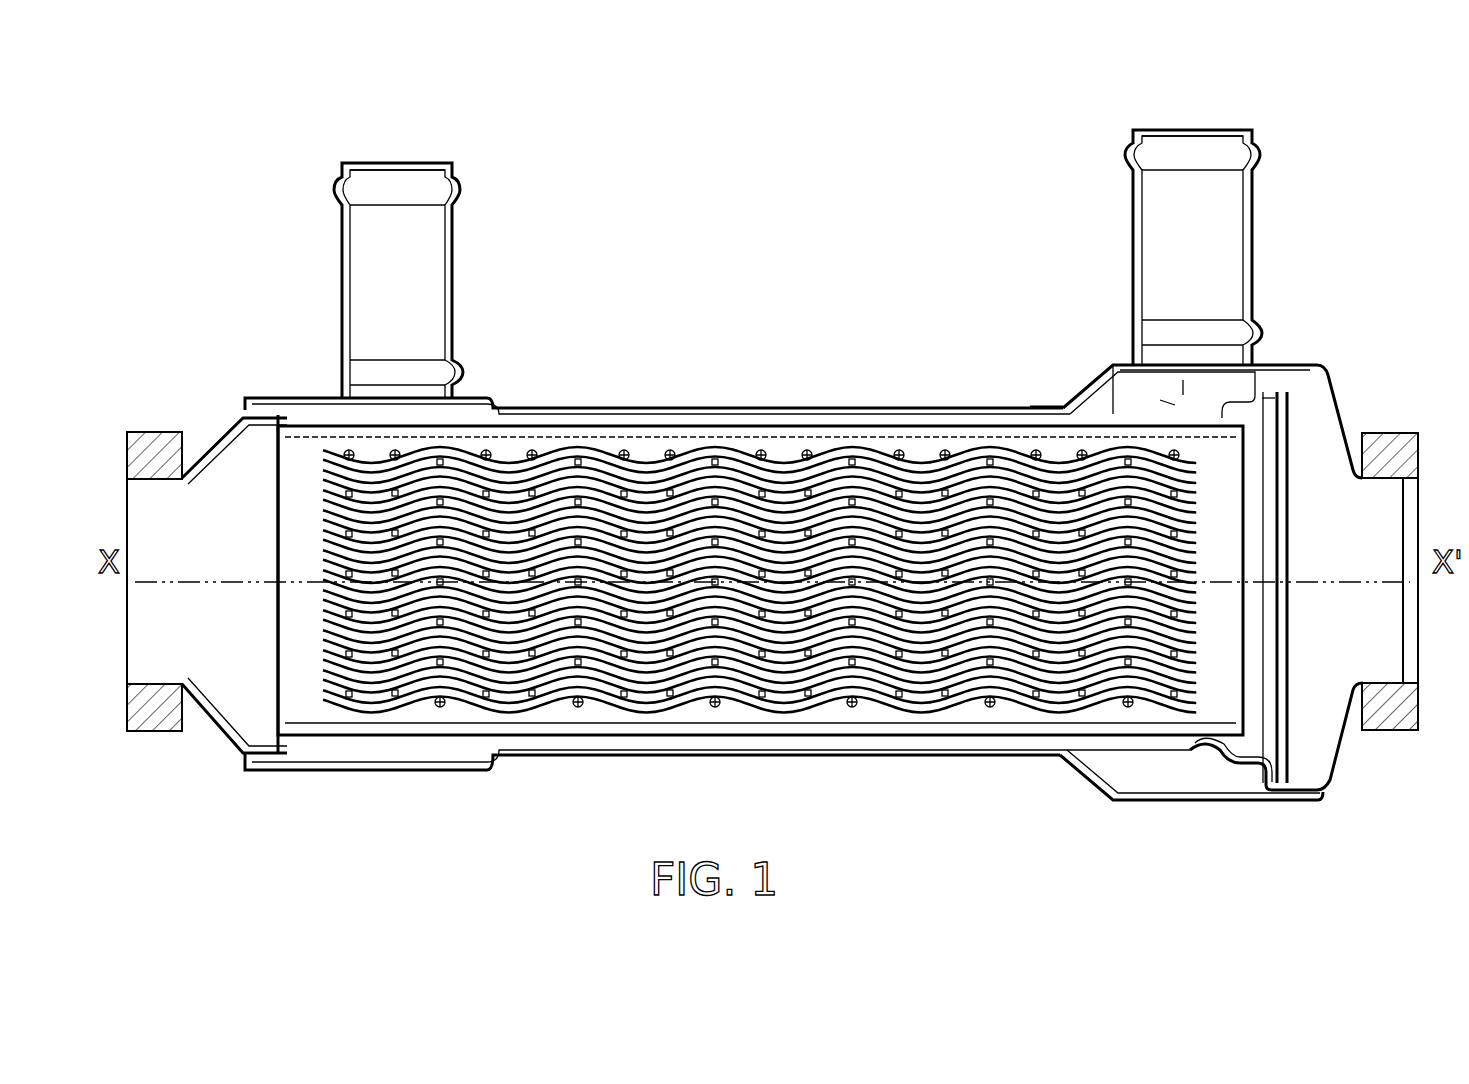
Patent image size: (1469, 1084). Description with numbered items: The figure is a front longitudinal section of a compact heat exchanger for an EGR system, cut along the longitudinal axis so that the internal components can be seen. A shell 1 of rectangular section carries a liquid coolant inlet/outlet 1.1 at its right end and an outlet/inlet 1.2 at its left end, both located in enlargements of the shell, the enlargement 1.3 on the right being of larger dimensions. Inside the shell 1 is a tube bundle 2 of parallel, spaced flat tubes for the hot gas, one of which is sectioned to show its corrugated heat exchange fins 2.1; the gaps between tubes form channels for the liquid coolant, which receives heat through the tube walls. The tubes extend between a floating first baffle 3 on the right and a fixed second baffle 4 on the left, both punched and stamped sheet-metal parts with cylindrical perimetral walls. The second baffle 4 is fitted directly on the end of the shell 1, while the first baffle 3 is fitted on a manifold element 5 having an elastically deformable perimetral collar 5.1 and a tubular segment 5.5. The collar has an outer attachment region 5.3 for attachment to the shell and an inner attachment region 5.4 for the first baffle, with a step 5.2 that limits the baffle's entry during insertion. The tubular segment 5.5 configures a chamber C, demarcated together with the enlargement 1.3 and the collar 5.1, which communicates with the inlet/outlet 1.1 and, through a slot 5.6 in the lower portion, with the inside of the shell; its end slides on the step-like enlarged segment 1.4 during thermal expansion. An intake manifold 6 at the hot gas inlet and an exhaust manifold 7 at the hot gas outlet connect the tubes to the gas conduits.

The shell 1 is at (778, 408).
The liquid coolant inlet/outlet 1.1 is at (1137, 187).
The outlet/inlet 1.2 is at (342, 300).
The enlargement 1.3 is at (1250, 397).
The enlarged segment 1.4 is at (1045, 403).
The tube bundle 2 is at (913, 425).
The corrugated heat exchange fins 2.1 is at (685, 452).
The first baffle 3 is at (1262, 740).
The second baffle 4 is at (243, 400).
The manifold element 5 is at (1062, 408).
The perimetral collar 5.1 is at (1292, 390).
The step 5.2 is at (1165, 400).
The outer attachment region 5.3 is at (1297, 367).
The inner attachment region 5.4 is at (1183, 387).
The tubular segment 5.5 is at (1090, 398).
The slot 5.6 is at (1208, 748).
The intake manifold 6 is at (1340, 430).
The exhaust manifold 7 is at (222, 440).
The chamber C is at (1102, 404).